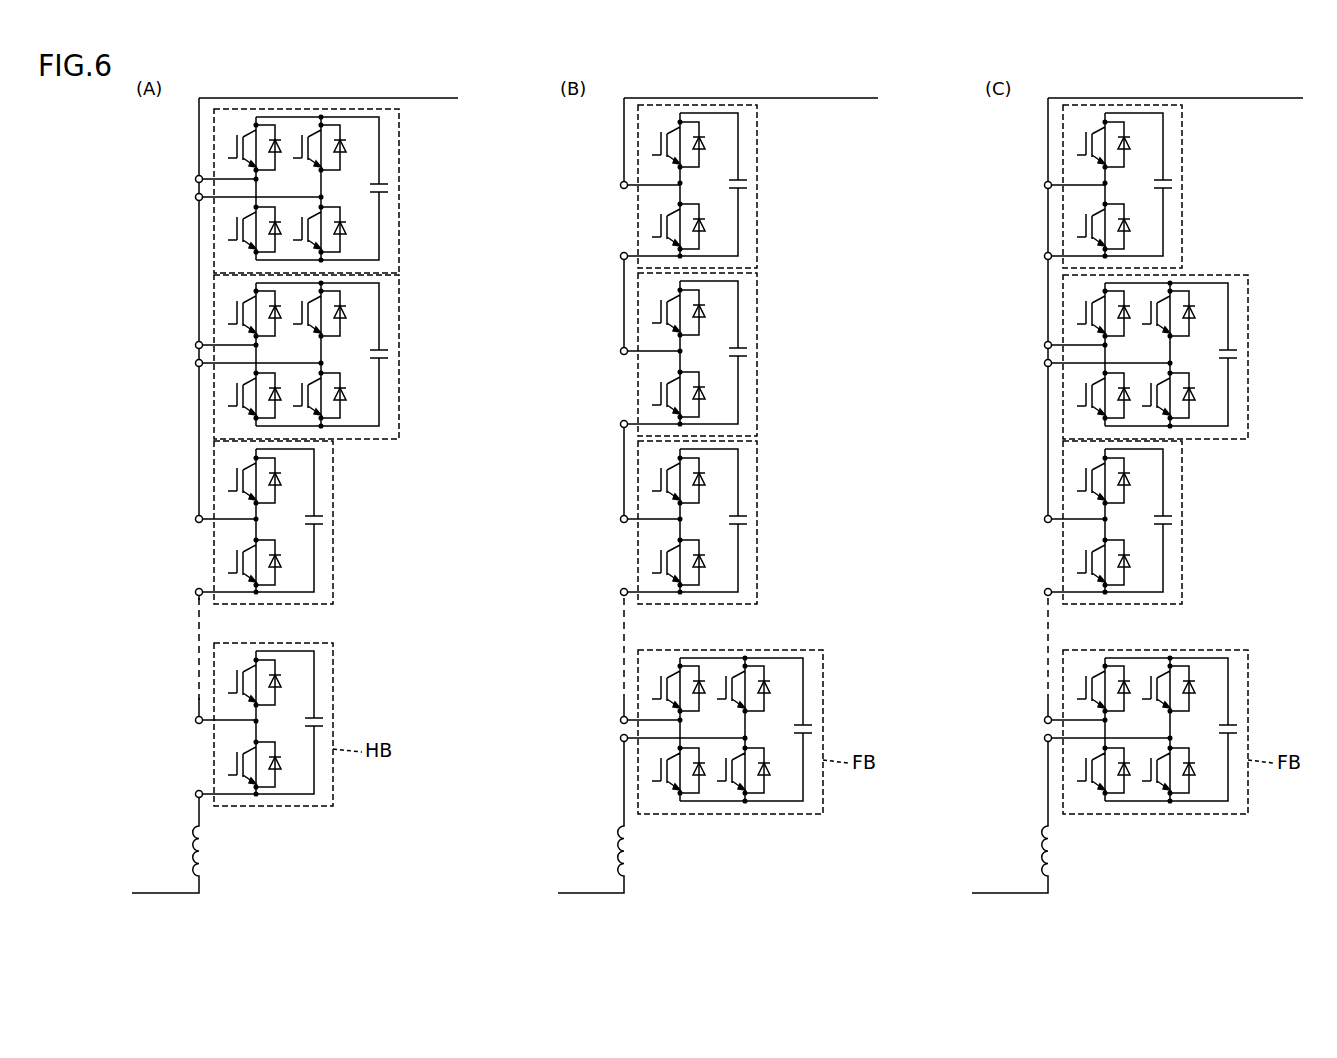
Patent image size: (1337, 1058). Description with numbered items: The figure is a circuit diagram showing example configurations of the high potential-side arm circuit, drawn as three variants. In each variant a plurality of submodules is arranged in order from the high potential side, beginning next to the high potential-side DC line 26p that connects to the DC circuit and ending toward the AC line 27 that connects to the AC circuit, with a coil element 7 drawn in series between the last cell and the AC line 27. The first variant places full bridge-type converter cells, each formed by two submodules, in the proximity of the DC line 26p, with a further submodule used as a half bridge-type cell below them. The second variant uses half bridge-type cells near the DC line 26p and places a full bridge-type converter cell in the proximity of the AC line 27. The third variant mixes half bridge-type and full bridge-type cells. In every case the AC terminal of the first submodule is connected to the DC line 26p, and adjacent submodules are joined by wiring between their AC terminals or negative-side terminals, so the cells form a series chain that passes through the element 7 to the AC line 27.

The high potential-side DC line 26p is at (1271, 84).
The AC line 27 is at (1028, 892).
The reactor 7 is at (1077, 856).